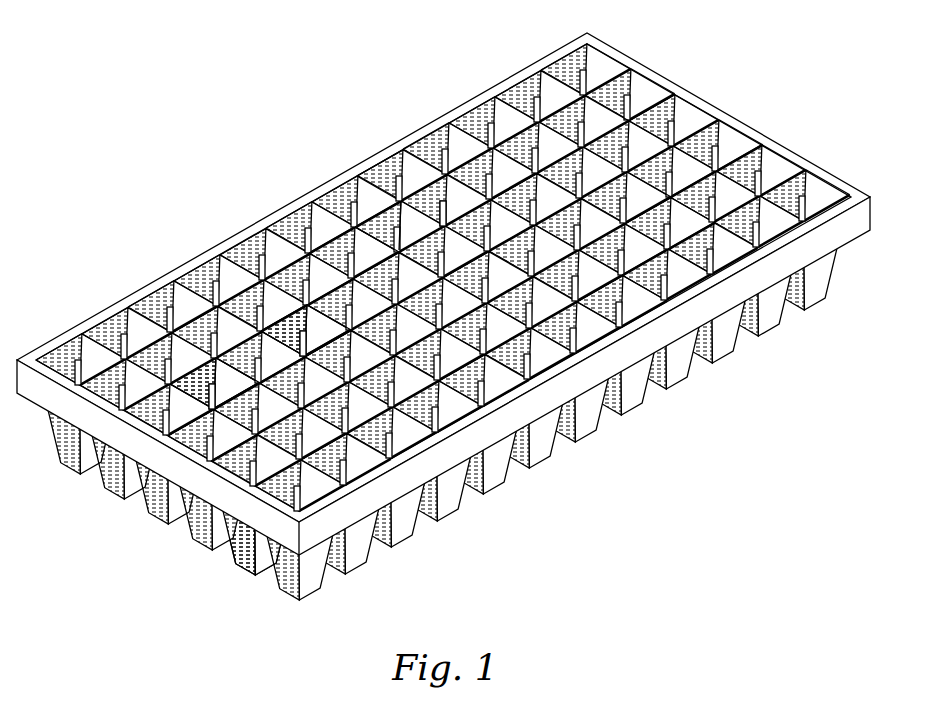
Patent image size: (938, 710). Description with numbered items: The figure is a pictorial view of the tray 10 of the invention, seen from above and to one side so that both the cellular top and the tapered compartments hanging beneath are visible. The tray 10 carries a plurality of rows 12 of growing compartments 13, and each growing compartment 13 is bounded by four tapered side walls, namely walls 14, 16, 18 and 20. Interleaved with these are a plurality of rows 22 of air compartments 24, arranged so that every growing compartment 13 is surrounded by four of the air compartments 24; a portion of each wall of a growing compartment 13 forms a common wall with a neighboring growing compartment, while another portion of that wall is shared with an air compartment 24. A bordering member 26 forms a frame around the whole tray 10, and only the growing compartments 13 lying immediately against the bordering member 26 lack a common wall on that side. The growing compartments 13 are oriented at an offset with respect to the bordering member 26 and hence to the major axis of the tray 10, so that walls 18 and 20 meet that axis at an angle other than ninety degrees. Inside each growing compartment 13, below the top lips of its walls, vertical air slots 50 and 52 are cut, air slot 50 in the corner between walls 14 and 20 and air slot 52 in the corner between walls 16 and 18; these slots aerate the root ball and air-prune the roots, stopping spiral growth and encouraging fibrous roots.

The tray 10 is at (676, 434).
The rows of growing compartments 12 is at (232, 466).
The growing compartment 13 is at (630, 185).
The wall 14 is at (355, 167).
The wall 16 is at (383, 218).
The wall 18 is at (360, 222).
The wall 20 is at (433, 212).
The rows of air compartments 22 is at (190, 403).
The air compartment 24 is at (297, 292).
The bordering member 26 is at (372, 495).
The air slot 50 is at (550, 130).
The air slot 52 is at (480, 470).